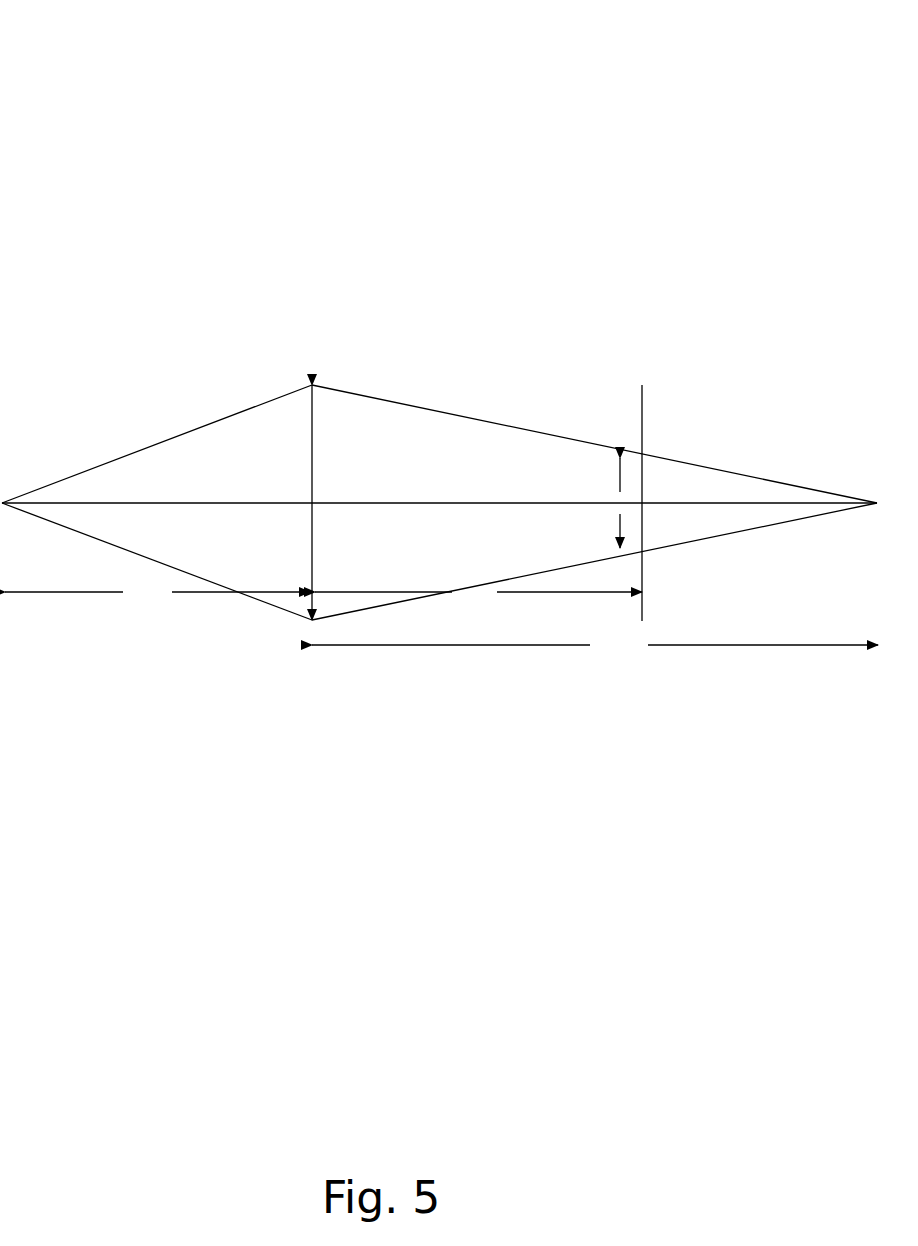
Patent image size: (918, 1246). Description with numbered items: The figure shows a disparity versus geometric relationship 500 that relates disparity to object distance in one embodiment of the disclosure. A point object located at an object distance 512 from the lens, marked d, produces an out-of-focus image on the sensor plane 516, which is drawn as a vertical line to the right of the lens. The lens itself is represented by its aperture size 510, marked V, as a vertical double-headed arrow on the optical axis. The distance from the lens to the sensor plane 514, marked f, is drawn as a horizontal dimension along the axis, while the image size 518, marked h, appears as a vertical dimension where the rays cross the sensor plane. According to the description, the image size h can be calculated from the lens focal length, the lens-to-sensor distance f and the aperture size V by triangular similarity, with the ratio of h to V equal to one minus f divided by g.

The optical system diagram 500 is at (148, 110).
The lens aperture size (V) 510 is at (278, 462).
The object distance (d) 512 is at (131, 612).
The distance from lens to sensor plane (f) 514 is at (465, 610).
The image sensor plane 516 is at (613, 668).
The image size (h) 518 is at (595, 483).